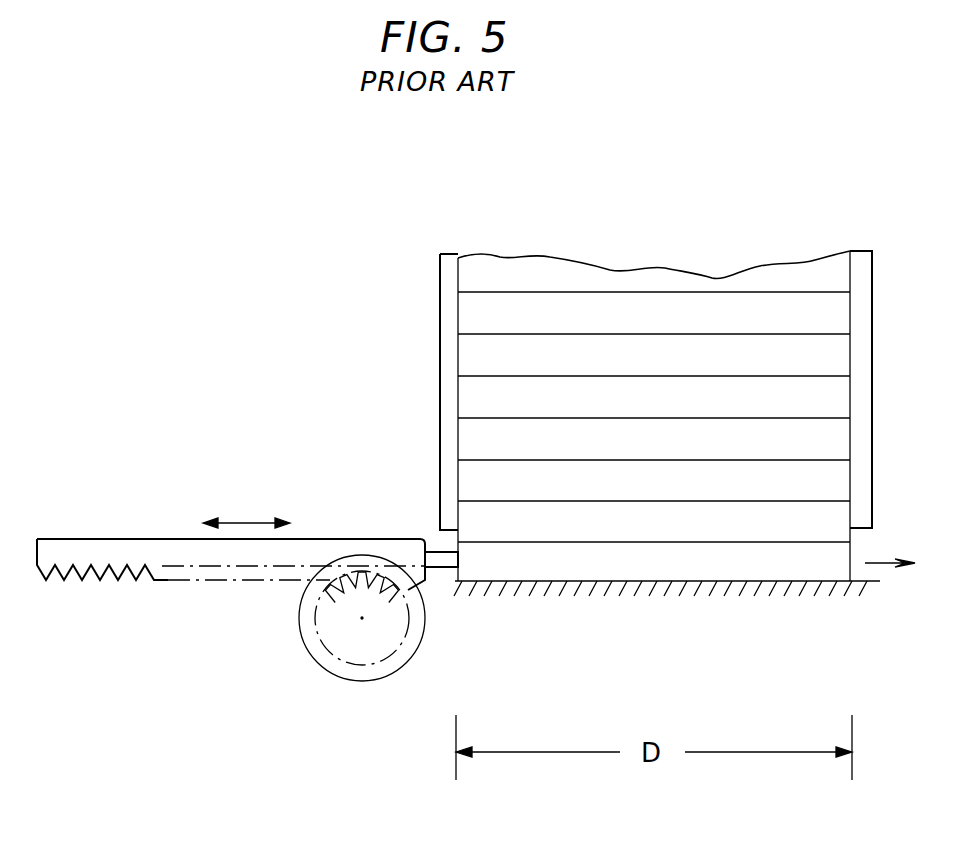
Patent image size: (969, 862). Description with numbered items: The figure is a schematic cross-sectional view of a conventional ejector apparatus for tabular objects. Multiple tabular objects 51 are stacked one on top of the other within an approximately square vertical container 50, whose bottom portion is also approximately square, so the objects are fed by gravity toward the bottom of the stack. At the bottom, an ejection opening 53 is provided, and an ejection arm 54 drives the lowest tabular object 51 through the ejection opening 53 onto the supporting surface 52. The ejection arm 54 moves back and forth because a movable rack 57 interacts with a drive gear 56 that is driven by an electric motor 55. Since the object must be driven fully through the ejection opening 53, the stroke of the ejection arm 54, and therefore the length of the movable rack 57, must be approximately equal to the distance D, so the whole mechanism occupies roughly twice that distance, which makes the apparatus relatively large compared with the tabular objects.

The container 50 is at (550, 262).
The tabular objects 51 is at (470, 430).
The table / support surface 52 is at (667, 619).
The ejection opening 53 is at (856, 530).
The ejection arm 54 is at (432, 568).
The electric motor 55 is at (347, 672).
The drive gear 56 is at (330, 608).
The movable rack 57 is at (370, 548).